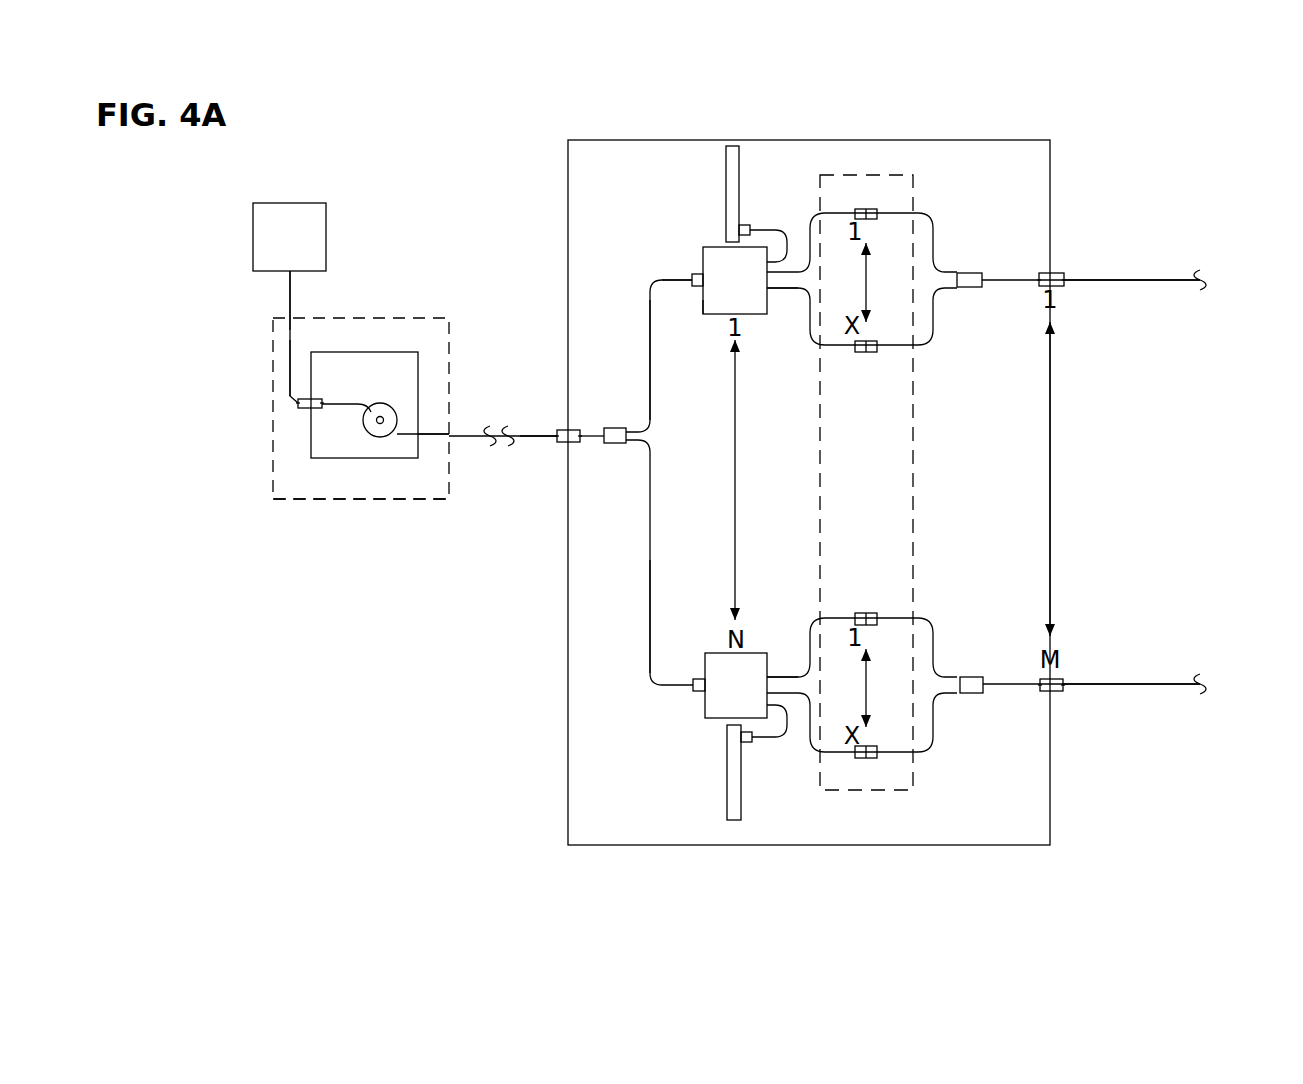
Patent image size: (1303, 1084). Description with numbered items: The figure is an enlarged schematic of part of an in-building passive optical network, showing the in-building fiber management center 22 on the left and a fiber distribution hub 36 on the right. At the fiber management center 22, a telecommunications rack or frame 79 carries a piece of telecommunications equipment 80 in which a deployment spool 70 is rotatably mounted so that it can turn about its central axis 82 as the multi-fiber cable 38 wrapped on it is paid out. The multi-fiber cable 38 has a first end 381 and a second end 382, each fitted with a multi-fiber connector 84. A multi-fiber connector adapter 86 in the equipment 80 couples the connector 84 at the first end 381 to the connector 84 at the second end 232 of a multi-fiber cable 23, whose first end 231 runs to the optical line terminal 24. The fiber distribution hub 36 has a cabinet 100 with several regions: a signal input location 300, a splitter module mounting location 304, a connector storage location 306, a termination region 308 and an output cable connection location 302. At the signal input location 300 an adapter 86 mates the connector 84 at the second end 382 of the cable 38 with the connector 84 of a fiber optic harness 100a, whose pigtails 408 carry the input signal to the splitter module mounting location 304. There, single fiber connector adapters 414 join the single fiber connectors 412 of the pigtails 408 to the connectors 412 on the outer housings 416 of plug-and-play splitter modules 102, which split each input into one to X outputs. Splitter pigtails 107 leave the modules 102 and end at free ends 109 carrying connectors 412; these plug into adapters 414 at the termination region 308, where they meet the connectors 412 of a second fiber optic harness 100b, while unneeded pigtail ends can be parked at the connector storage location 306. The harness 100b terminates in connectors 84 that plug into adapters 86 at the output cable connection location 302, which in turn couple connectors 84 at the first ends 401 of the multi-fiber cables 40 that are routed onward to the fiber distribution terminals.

The optical line terminal 24 is at (292, 203).
The multi-fiber cable 23 is at (290, 310).
The first end of multi-fiber cable 23 231 is at (285, 272).
The second end of multi-fiber cable 23 232 is at (297, 402).
The in-building fiber management center 22 is at (393, 316).
The telecommunications rack or frame 79 is at (333, 501).
The piece of telecommunications equipment 80 is at (402, 458).
The deployment spool 70 is at (394, 406).
The central axis 82 is at (374, 426).
The multi-fiber connector 84 is at (311, 398).
The multi-fiber connector adapter 86 is at (299, 400).
The multi-fiber cable 38 is at (518, 432).
The first end of multi-fiber cable 38 381 is at (324, 402).
The second end of multi-fiber cable 38 382 is at (559, 441).
The signal input location 300 is at (573, 428).
The fiber distribution hub 36 is at (800, 848).
The cabinet 100 is at (994, 140).
The fiber optic harness 100a is at (648, 590).
The fiber optic harness 100b is at (946, 326).
The pigtails of harness 100a 408 is at (650, 297).
The splitter module mounting location 304 is at (683, 312).
The splitter module 102 is at (704, 246).
The outer housing 416 is at (716, 316).
The connector storage location 306 is at (753, 155).
The termination region 308 is at (893, 170).
The free end 109 is at (849, 209).
The splitter pigtail 107 is at (778, 291).
The single fiber connector adapter 414 is at (692, 276).
The single fiber connector 412 is at (860, 352).
The multi-fiber cable 40 is at (1137, 280).
The first end of multi-fiber cable 40 401 is at (1063, 286).
The output cable connection location 302 is at (1172, 380).